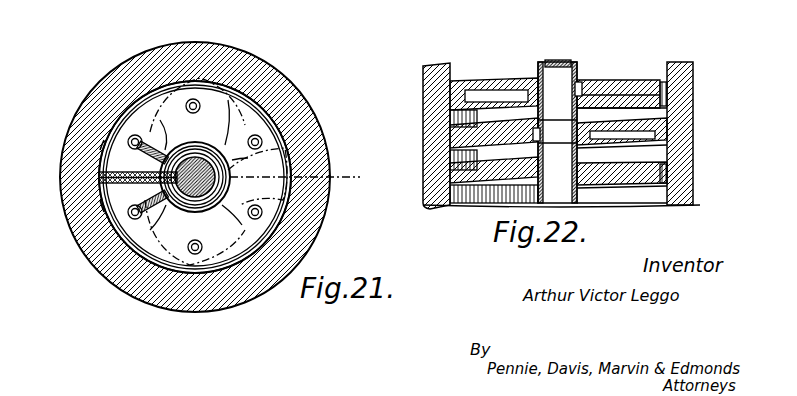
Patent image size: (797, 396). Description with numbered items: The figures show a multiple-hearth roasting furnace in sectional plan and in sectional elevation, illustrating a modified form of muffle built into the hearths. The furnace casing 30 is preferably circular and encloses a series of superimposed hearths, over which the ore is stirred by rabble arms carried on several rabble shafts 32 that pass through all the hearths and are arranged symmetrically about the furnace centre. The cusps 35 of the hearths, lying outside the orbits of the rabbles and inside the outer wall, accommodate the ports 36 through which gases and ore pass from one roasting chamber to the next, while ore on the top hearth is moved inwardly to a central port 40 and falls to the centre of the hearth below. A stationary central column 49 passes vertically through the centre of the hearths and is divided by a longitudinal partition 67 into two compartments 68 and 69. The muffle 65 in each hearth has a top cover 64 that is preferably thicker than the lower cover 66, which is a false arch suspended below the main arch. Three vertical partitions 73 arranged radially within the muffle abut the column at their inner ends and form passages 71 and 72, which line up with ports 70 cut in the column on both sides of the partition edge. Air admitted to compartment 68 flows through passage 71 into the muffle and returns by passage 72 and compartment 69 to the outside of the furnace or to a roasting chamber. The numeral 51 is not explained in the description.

In FIG. 21, the furnace casing 30 is at (326, 222).
In FIG. 21, the rabble shaft 32 is at (262, 200).
In FIG. 21, the cusp 35 is at (267, 177).
In FIG. 22, the port 36 is at (450, 101).
In FIG. 21, the central port 40 is at (232, 161).
In FIG. 22, the central port 40 is at (590, 118).
In FIG. 22, the central column 49 is at (545, 62).
In FIG. 22, the connector 51 is at (642, 80).
In FIG. 22, the top cover 64 is at (524, 97).
In FIG. 21, the muffle 65 is at (185, 98).
In FIG. 22, the muffle 65 is at (488, 94).
In FIG. 22, the lower cover 66 is at (450, 125).
In FIG. 21, the longitudinal partition 67 is at (206, 242).
In FIG. 22, the longitudinal partition 67 is at (560, 62).
In FIG. 21, the compartment 68 is at (255, 167).
In FIG. 21, the compartment 69 is at (206, 232).
In FIG. 21, the port 70 is at (158, 153).
In FIG. 21, the passage 71 is at (66, 157).
In FIG. 21, the passage 72 is at (66, 207).
In FIG. 21, the vertical partition 73 is at (122, 76).